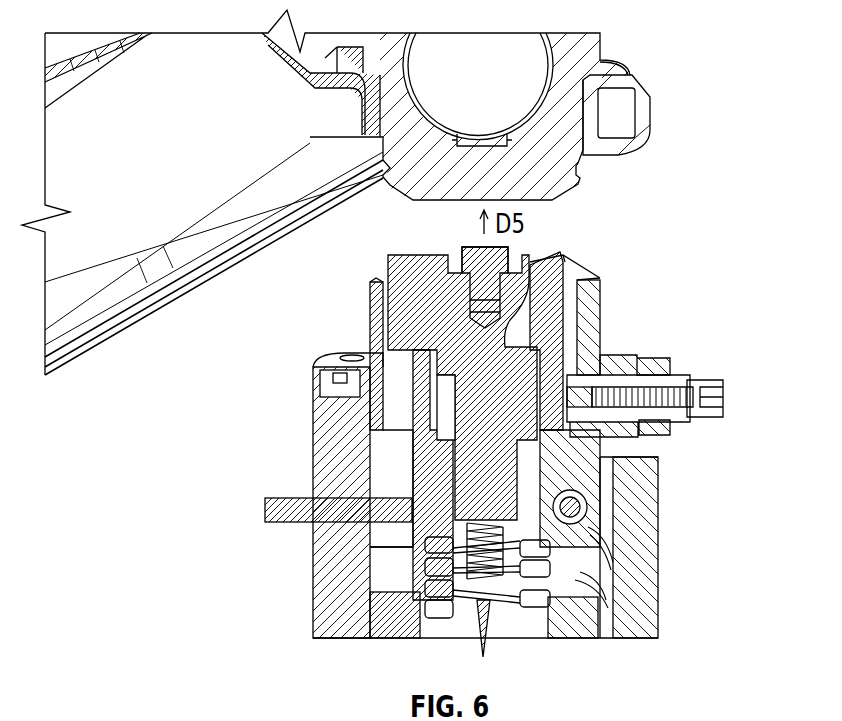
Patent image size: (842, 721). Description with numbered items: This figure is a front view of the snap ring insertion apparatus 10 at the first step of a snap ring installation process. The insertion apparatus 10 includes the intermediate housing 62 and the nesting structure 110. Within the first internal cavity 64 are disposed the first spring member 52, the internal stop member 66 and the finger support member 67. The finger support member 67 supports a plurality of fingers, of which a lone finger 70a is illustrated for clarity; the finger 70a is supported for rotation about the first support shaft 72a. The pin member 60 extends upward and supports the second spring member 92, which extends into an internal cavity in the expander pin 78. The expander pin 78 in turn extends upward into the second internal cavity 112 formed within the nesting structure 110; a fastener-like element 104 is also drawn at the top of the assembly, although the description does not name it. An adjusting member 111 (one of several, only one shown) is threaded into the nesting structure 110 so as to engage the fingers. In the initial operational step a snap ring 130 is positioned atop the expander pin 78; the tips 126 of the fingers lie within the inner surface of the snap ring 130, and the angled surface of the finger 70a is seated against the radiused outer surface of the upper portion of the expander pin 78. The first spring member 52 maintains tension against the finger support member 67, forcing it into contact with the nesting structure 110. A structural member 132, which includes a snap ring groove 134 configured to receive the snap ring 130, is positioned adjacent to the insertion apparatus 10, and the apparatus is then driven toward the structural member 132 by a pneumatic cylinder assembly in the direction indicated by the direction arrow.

The insertion apparatus 10 is at (748, 352).
The first spring member 52 is at (453, 640).
The pin member 60 is at (490, 623).
The intermediate housing 62 is at (658, 507).
The first internal cavity 64 is at (600, 578).
The internal stop member 66 is at (388, 628).
The finger support member 67 is at (612, 533).
The finger 70a is at (555, 337).
The first support shaft 72a is at (560, 505).
The expander pin 78 is at (470, 412).
The second spring member 92 is at (553, 627).
The fastener 104 is at (520, 257).
The nesting structure 110 is at (315, 428).
The adjusting member 111 is at (723, 418).
The second internal cavity 112 is at (374, 290).
The tips 126 is at (563, 262).
The snap ring 130 is at (592, 280).
The structural member 132 is at (117, 33).
The snap ring groove 134 is at (580, 172).